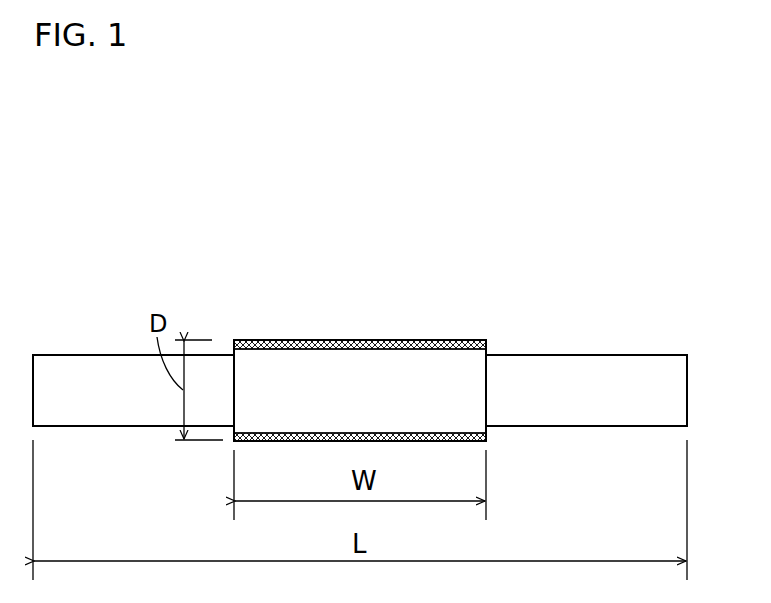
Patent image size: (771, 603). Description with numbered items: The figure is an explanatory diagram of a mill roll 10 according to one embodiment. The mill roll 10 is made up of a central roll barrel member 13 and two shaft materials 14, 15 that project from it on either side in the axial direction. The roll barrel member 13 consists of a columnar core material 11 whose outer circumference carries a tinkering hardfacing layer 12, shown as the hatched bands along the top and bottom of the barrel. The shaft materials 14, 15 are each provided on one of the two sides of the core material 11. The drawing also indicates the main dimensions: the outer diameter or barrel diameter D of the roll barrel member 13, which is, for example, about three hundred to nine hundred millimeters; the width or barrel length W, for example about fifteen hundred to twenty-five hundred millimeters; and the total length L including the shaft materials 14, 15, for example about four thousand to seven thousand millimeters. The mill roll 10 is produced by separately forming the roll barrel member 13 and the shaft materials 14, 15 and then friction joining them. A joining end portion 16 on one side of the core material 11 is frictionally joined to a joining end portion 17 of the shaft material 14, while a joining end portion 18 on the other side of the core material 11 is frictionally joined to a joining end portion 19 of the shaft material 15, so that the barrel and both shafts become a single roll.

The mill roll 10 is at (585, 208).
The columnar core material 11 is at (405, 368).
The tinkering hardfacing layer 12 is at (328, 340).
The roll barrel member 13 is at (417, 292).
The shaft material 14 is at (100, 367).
The shaft material 15 is at (657, 377).
The joining end portion 16 is at (233, 375).
The joining end portion 17 is at (235, 410).
The joining end portion 18 is at (486, 413).
The joining end portion 19 is at (486, 374).